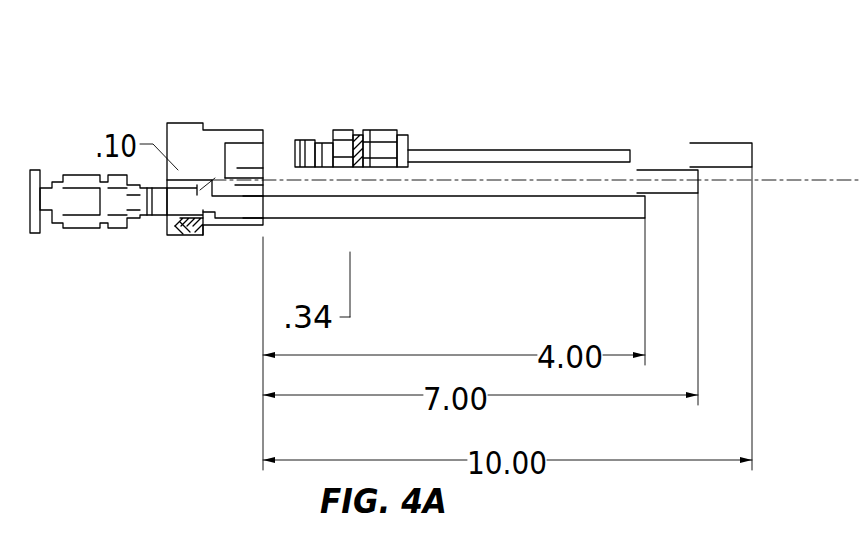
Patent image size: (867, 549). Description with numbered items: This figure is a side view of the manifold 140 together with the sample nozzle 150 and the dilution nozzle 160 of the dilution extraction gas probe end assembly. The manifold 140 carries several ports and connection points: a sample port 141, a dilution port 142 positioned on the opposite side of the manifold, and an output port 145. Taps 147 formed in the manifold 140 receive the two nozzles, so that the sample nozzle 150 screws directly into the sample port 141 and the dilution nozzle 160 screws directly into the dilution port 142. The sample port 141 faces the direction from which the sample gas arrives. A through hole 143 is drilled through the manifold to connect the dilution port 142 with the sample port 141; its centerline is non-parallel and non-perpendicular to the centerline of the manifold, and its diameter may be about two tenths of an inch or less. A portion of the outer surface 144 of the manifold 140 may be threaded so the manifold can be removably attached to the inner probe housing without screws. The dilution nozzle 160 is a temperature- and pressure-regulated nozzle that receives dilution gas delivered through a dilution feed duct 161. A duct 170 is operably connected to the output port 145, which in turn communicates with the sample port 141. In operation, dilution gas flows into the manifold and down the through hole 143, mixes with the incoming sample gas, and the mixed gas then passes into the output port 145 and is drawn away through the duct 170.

The manifold 140 is at (222, 130).
The sample port 141 is at (178, 205).
The dilution port 142 is at (258, 157).
The through hole 143 is at (190, 207).
The outer surface 144 is at (185, 123).
The output port 145 is at (250, 205).
The taps 147 is at (182, 218).
The sample nozzle 150 is at (117, 223).
The dilution nozzle 160 is at (342, 173).
The dilution feed duct 161 is at (528, 150).
The duct 170 is at (522, 218).